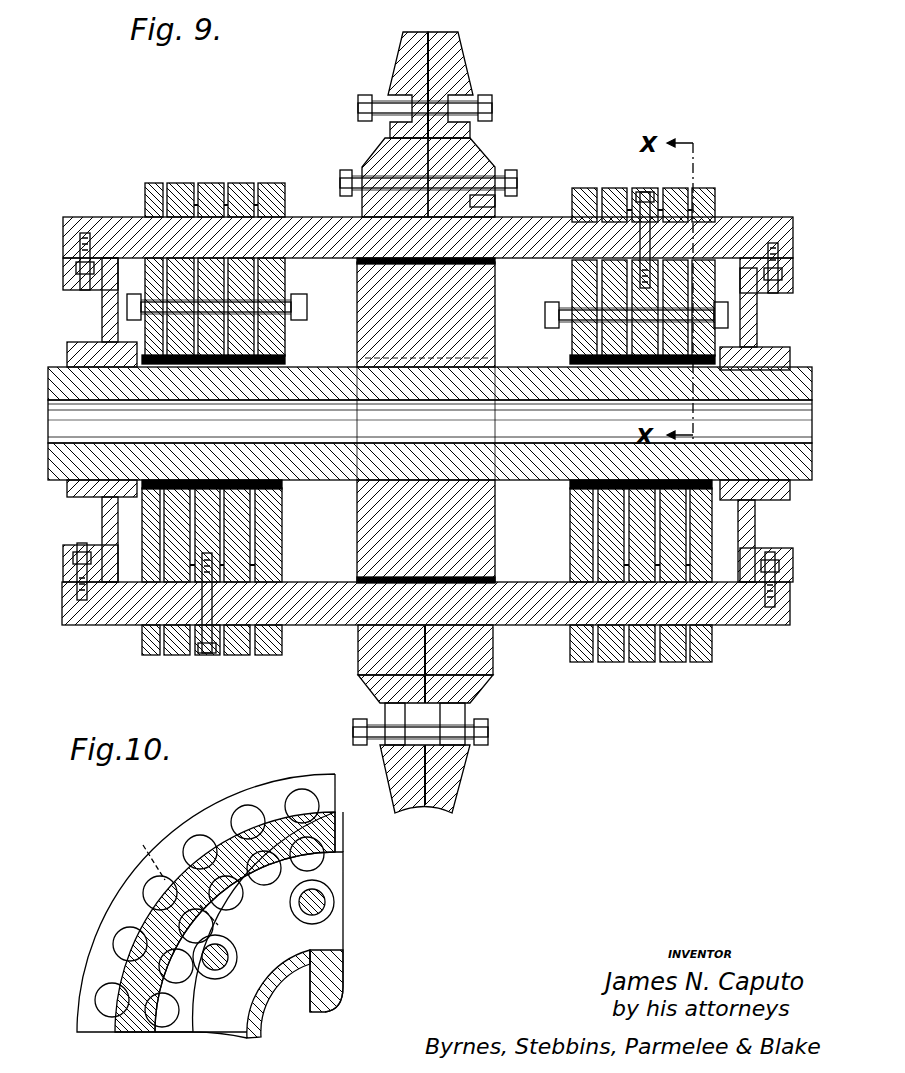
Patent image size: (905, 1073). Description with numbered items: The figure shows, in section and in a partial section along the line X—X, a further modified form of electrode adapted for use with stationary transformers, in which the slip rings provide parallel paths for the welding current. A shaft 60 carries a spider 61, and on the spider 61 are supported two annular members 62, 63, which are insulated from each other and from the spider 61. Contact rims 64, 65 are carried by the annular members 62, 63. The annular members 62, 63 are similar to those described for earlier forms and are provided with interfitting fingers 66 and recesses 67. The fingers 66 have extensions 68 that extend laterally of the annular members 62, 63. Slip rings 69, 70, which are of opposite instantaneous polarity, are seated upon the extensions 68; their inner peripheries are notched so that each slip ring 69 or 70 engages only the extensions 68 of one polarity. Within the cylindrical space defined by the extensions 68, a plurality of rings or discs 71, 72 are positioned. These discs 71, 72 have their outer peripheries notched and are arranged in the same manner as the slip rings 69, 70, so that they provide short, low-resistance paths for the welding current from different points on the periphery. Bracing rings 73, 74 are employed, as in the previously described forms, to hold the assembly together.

In FIG. 9, the shaft 60 is at (55, 372).
In FIG. 10, the shaft 60 is at (325, 960).
In FIG. 9, the spider 61 is at (357, 522).
In FIG. 9, the annular member 62 is at (385, 150).
In FIG. 9, the annular member 63 is at (470, 152).
In FIG. 9, the contact rim 64 is at (403, 50).
In FIG. 9, the contact rim 65 is at (458, 50).
In FIG. 9, the finger 66 is at (465, 258).
In FIG. 9, the recess 67 is at (485, 205).
In FIG. 9, the extension 68 is at (108, 222).
In FIG. 10, the extension 68 is at (330, 830).
In FIG. 9, the slip ring 69 is at (152, 184).
In FIG. 9, the slip ring 70 is at (183, 184).
In FIG. 10, the slip ring 70 is at (278, 787).
In FIG. 9, the disc 71 is at (760, 342).
In FIG. 9, the disc 72 is at (730, 288).
In FIG. 10, the disc 72 is at (322, 866).
In FIG. 9, the bracing ring 73 is at (102, 520).
In FIG. 9, the bracing ring 74 is at (758, 321).